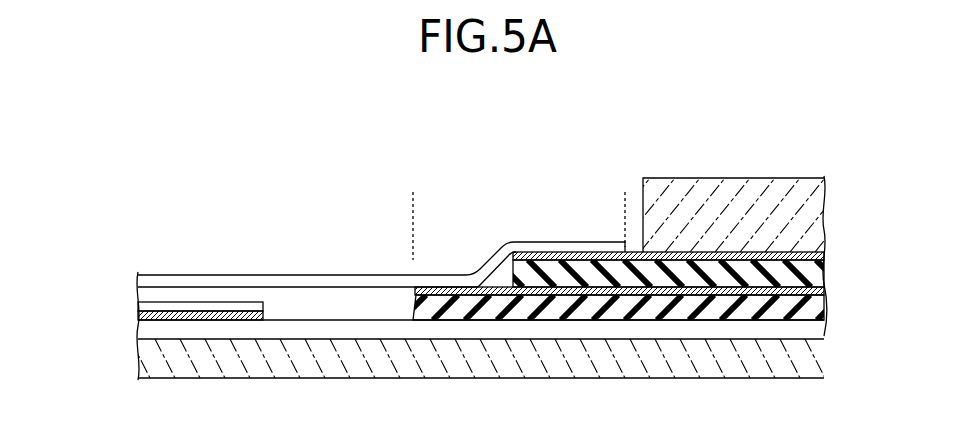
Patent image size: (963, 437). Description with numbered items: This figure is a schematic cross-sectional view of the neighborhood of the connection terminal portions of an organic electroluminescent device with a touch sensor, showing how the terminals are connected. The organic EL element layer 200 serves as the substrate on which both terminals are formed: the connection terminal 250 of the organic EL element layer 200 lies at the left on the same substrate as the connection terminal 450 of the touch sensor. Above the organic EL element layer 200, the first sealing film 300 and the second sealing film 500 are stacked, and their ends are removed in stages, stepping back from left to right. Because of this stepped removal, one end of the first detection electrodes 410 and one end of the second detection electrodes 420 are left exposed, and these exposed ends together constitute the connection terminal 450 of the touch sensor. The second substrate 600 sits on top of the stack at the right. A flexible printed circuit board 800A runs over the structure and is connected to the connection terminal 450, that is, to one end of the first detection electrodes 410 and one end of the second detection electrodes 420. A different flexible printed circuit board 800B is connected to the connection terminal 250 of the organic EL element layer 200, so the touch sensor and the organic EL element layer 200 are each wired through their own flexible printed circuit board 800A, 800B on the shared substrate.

The organic EL element layer 200 is at (826, 320).
The connection terminal of the organic EL element layer 250 is at (140, 313).
The first sealing film 300 is at (714, 310).
The first detection electrodes 410 is at (817, 289).
The second detection electrodes 420 is at (817, 257).
The connection terminal of the touch sensor 450 is at (625, 200).
The second sealing film 500 is at (668, 277).
The second substrate 600 is at (817, 208).
The flexible printed circuit board 800A is at (343, 276).
The flexible printed circuit board 800B is at (140, 305).